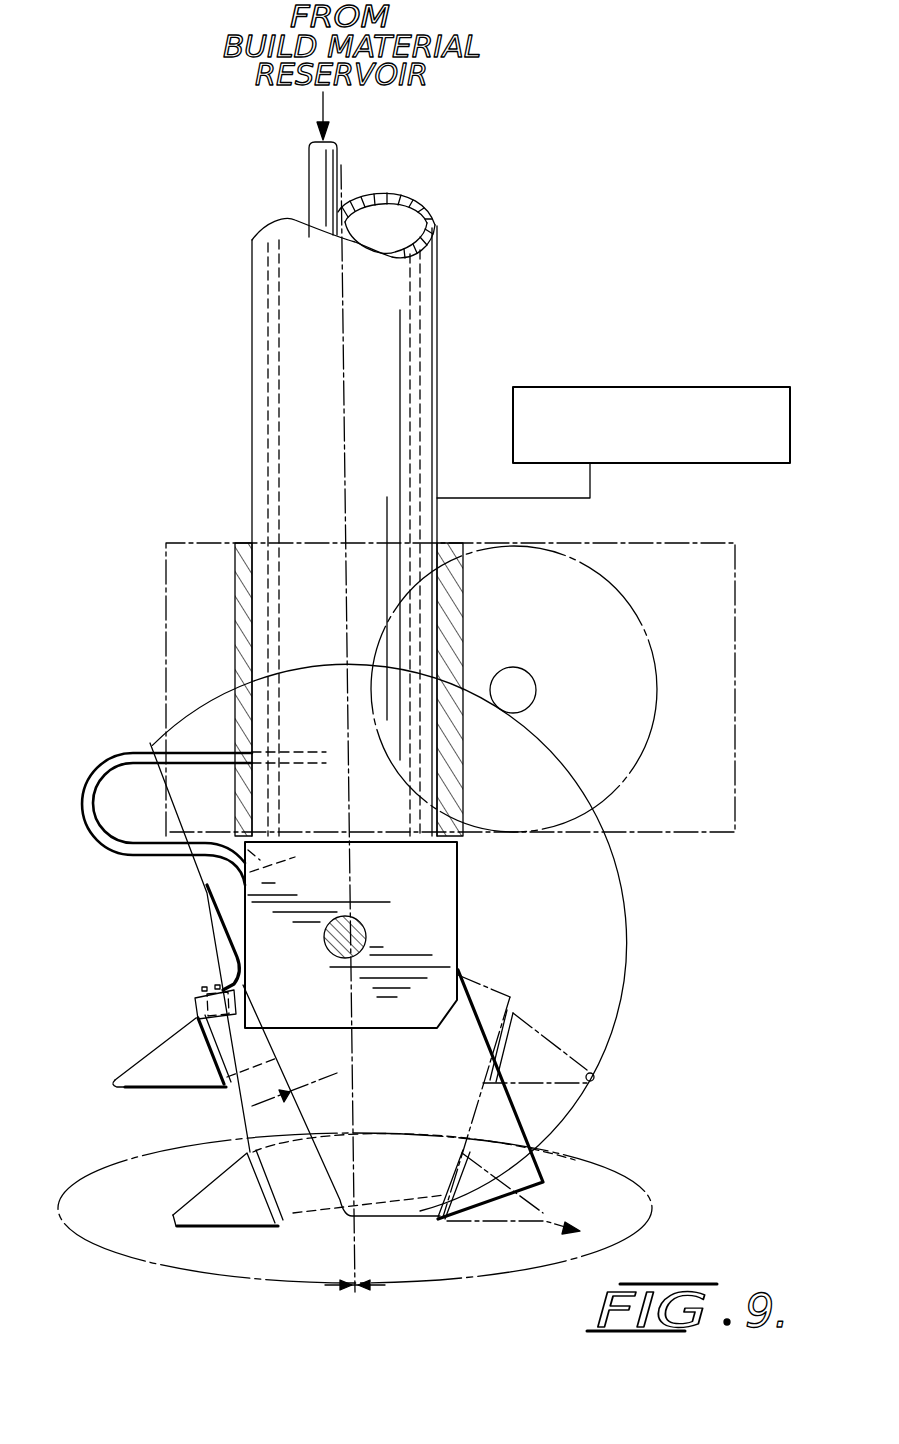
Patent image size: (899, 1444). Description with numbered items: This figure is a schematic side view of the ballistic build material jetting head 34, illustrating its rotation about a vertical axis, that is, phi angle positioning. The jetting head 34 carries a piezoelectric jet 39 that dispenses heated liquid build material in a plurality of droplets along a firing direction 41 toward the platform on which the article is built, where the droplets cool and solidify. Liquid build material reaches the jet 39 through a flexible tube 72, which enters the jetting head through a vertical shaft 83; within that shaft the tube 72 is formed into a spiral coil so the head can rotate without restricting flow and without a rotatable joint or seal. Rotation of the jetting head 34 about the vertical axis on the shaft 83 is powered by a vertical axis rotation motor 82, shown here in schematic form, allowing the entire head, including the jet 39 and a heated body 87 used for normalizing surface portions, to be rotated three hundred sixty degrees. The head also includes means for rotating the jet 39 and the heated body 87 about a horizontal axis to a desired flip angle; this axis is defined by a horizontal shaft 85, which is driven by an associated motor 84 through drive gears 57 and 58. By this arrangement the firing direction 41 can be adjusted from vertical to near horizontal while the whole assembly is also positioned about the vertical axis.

The jetting head 34 is at (92, 594).
The piezoelectric jet 39 is at (200, 1216).
The firing direction 41 is at (150, 1230).
The drive gear 57 is at (538, 688).
The drive gear 58 is at (597, 752).
The flexible tube 72 is at (338, 153).
The vertical axis rotation motor 82 is at (652, 387).
The vertical shaft 83 is at (426, 326).
The motor 84 is at (658, 770).
The horizontal shaft 85 is at (364, 930).
The heated body 87 is at (162, 1060).